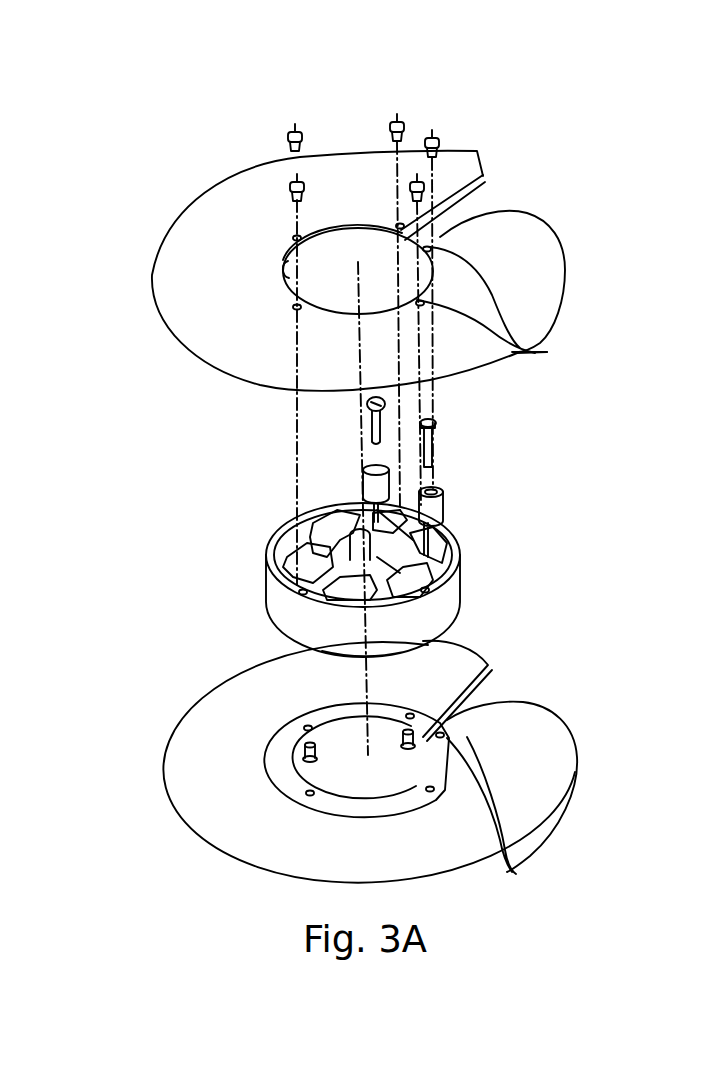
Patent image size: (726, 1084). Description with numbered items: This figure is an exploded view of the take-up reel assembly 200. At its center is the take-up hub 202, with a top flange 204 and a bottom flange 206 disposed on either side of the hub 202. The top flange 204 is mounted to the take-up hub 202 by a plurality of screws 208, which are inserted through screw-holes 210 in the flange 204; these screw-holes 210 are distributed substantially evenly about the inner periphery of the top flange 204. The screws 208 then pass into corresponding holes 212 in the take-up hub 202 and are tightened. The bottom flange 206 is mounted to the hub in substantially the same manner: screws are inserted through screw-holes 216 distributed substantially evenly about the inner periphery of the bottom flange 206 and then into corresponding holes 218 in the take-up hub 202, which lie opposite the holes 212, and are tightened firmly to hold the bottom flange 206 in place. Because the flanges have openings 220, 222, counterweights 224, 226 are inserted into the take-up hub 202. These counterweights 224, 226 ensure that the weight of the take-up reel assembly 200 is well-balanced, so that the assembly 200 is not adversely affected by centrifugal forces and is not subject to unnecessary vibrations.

The take-up reel assembly 200 is at (618, 428).
The take-up hub 202 is at (455, 600).
The top flange 204 is at (548, 265).
The bottom flange 206 is at (568, 768).
The screws 208 is at (415, 174).
The screw-holes 210 is at (547, 352).
The holes 212 is at (272, 598).
The screw-holes 216 is at (507, 872).
The holes 218 is at (462, 646).
The opening 220 is at (512, 182).
The opening 222 is at (572, 683).
The counterweight 224 is at (395, 470).
The counterweight 226 is at (443, 502).